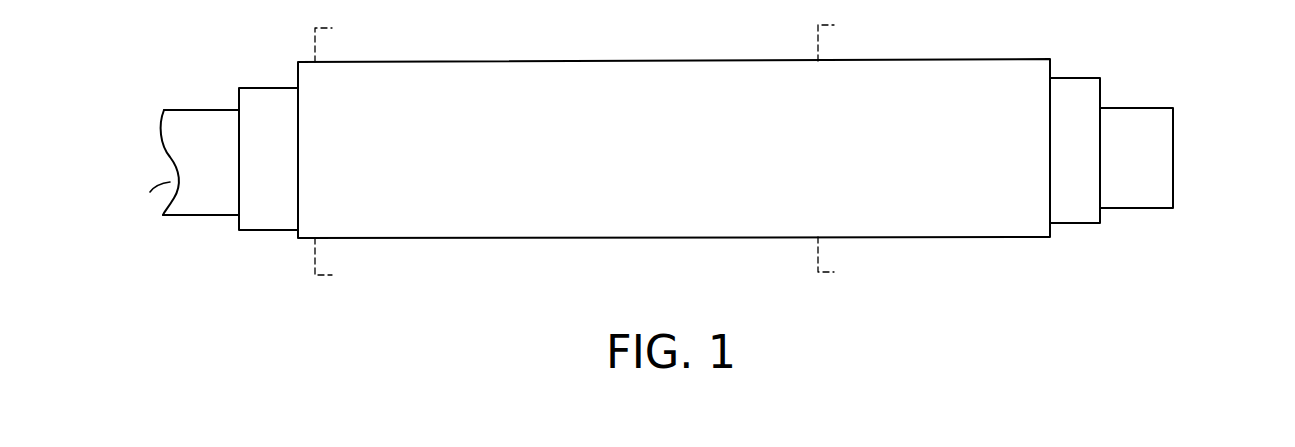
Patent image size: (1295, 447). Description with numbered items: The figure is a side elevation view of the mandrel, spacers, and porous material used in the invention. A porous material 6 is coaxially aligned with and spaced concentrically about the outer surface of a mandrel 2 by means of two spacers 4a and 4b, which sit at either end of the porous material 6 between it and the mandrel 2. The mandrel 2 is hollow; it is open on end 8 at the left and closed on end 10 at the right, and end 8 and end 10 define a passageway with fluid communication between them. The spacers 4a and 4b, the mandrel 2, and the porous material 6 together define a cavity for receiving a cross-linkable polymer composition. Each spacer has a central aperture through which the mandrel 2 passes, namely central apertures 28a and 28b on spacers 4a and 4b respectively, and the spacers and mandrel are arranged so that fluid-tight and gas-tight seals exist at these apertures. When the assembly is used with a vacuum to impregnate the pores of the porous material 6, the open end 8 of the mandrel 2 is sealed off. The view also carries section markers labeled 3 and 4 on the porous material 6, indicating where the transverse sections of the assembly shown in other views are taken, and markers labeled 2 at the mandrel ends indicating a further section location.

The mandrel 2 is at (202, 110).
The section line 3- 3 is at (337, 28).
The section line 4- 4 is at (839, 25).
The spacer 4a is at (272, 88).
The spacer 4b is at (1074, 78).
The porous material 6 is at (487, 61).
The end 8 is at (150, 192).
The end 10 is at (1173, 189).
The central aperture 28a is at (238, 198).
The central aperture 28b is at (1100, 123).